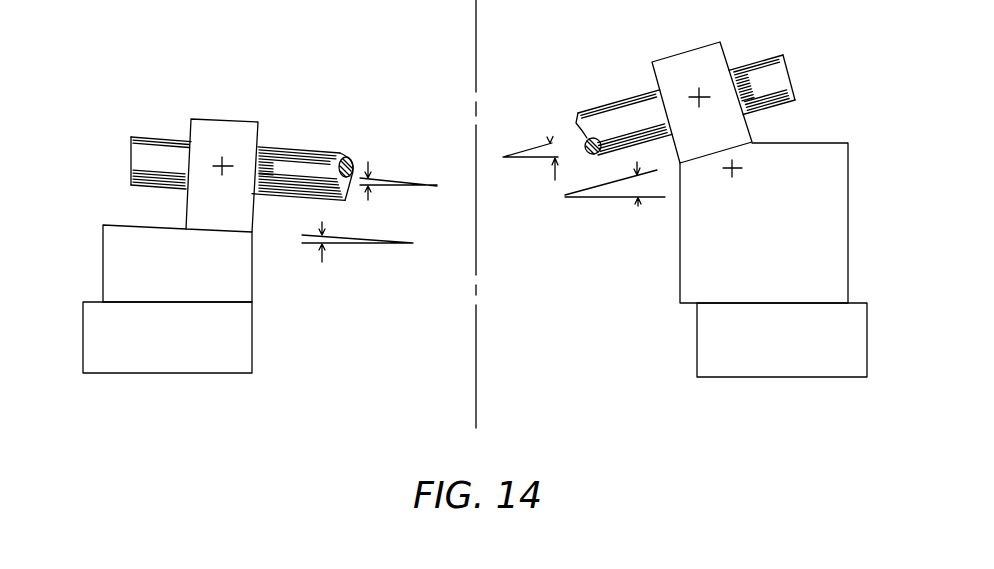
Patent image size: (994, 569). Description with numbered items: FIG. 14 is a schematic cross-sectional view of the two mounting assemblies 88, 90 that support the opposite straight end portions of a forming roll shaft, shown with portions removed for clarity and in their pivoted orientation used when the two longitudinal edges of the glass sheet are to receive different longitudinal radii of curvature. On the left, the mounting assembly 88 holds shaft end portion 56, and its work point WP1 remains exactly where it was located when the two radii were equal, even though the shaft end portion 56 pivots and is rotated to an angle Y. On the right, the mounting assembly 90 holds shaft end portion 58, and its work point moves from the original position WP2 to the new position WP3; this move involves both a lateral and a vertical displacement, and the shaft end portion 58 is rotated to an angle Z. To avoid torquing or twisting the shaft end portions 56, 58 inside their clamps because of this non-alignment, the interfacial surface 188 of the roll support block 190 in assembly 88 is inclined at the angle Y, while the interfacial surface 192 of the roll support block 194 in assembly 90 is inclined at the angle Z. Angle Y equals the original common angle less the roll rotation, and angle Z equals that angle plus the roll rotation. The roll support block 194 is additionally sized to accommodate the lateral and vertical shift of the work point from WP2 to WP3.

The shaft end portion 56 is at (162, 138).
The shaft end portion 58 is at (748, 62).
The mounting assembly 88 is at (163, 416).
The mounting assembly 90 is at (792, 411).
The interfacial surface 188 is at (186, 227).
The roll support block 190 is at (103, 254).
The interfacial surface 192 is at (752, 142).
The roll support block 194 is at (680, 273).
The work point WP1 is at (224, 164).
The work point WP2 is at (733, 171).
The work point WP3 is at (693, 99).
The angle Y is at (368, 162).
The angle Z is at (550, 141).